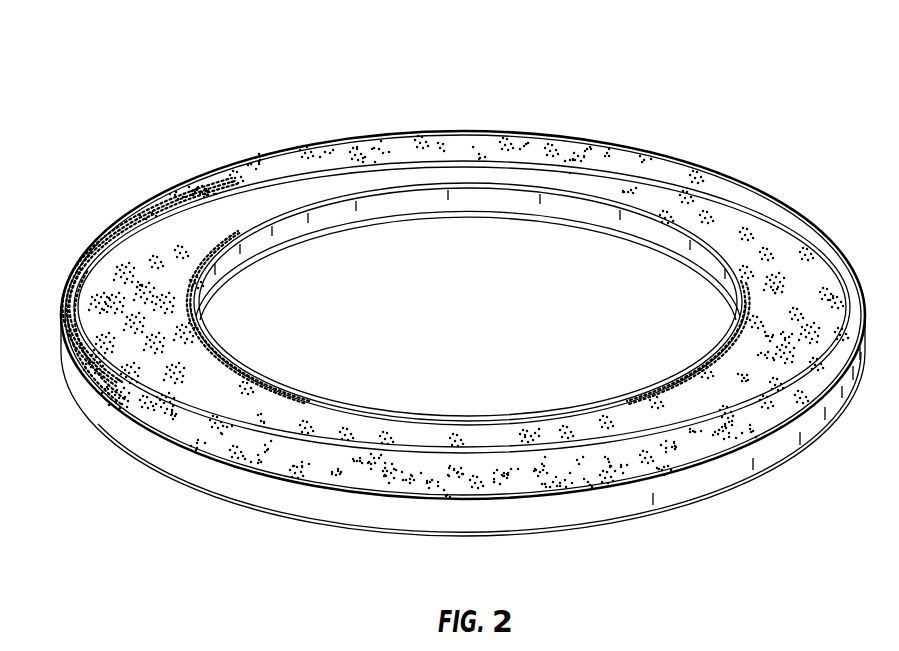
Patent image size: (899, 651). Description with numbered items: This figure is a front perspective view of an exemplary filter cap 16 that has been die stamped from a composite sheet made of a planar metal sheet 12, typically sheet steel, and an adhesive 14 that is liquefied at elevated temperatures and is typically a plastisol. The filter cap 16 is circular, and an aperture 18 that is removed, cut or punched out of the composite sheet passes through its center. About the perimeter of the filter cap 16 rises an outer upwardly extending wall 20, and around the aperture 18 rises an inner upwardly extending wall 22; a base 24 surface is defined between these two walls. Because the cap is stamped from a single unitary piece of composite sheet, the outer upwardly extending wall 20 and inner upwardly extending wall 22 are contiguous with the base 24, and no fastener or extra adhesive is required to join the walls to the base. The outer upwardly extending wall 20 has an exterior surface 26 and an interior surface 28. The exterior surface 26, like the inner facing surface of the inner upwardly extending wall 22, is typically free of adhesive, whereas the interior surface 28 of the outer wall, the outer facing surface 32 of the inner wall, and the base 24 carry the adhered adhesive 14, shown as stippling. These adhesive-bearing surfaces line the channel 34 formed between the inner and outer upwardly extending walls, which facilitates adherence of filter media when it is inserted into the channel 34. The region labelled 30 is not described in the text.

The planar metal sheet 12 is at (202, 473).
The adhesive 14 is at (146, 288).
The filter cap 16 is at (733, 106).
The aperture 18 is at (491, 250).
The outer upwardly extending wall 20 is at (589, 514).
The inner upwardly extending wall 22 is at (559, 422).
The base 24 is at (412, 484).
The exterior surface 26 is at (703, 481).
The interior surface 28 is at (601, 157).
The inner wall 30 is at (293, 226).
The outer facing surface 32 is at (258, 388).
The channel 34 is at (208, 373).